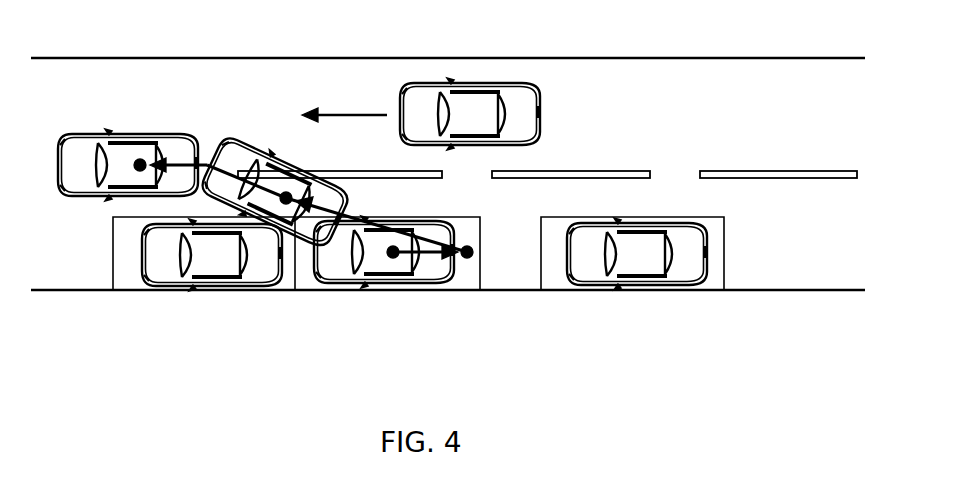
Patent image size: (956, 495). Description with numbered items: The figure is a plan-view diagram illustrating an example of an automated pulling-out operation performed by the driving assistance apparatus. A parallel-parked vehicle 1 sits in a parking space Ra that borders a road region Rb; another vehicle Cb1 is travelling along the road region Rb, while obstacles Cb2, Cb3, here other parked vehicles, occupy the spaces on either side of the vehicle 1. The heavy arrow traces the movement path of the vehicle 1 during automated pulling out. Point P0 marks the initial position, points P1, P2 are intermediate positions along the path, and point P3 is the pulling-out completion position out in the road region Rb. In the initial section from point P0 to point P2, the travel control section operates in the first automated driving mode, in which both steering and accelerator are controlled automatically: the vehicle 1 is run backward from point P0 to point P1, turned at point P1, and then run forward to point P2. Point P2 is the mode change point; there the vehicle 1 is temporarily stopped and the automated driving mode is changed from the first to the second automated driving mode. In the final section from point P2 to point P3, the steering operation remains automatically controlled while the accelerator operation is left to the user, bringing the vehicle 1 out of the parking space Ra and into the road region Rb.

The vehicle 1 is at (344, 272).
The initial position P0 is at (387, 264).
The intermediate position P1 is at (463, 264).
The intermediate position P2 is at (285, 193).
The pulling-out completion position P3 is at (140, 160).
The other vehicle Cb1 is at (486, 82).
The obstacle Cb2 is at (226, 264).
The obstacle Cb3 is at (646, 263).
The parking space Ra is at (303, 284).
The road region Rb is at (718, 57).